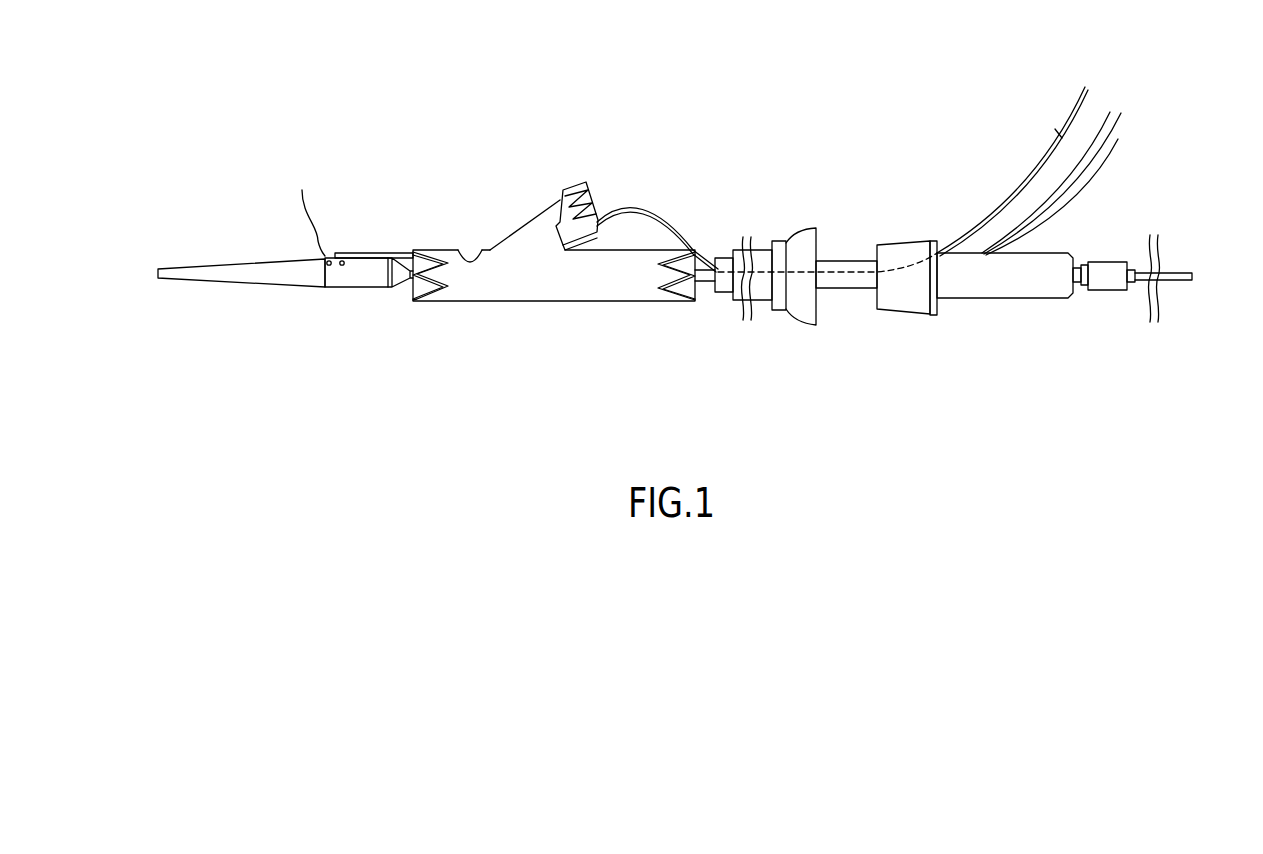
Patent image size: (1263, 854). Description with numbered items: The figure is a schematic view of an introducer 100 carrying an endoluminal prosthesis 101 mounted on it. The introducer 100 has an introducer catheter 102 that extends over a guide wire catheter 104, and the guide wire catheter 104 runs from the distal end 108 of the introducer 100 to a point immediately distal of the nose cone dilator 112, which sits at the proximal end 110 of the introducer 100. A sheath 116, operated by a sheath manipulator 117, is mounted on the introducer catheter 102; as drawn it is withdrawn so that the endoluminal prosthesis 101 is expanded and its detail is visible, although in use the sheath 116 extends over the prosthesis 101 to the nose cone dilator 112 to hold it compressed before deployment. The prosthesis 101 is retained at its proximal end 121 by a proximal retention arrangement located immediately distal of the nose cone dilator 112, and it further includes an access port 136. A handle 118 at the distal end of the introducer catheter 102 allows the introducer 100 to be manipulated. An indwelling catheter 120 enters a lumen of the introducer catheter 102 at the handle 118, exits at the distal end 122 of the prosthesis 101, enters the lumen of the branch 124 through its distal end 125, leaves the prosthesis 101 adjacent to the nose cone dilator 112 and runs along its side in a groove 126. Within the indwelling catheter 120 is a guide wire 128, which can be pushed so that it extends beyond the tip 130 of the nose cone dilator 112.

The introducer 100 is at (409, 115).
The endoluminal prosthesis 101 is at (552, 282).
The introducer catheter 102 is at (727, 283).
The guide wire catheter 104 is at (408, 273).
The distal end of the introducer 108 is at (1158, 229).
The proximal end of the introducer 110 is at (234, 215).
The nose cone dilator 112 is at (374, 279).
The sheath 116 is at (762, 257).
The sheath manipulator 117 is at (797, 305).
The handle 118 is at (990, 284).
The indwelling catheter 120 is at (360, 253).
The proximal end of the endoluminal prosthesis 121 is at (418, 303).
The distal end of the endoluminal prosthesis 122 is at (702, 302).
The branch 124 is at (553, 207).
The distal end of the branch 125 is at (598, 205).
The groove 126 is at (352, 264).
The guide wire 128 is at (1070, 107).
The tip of the nose cone dilator 130 is at (161, 282).
The access port 136 is at (472, 248).